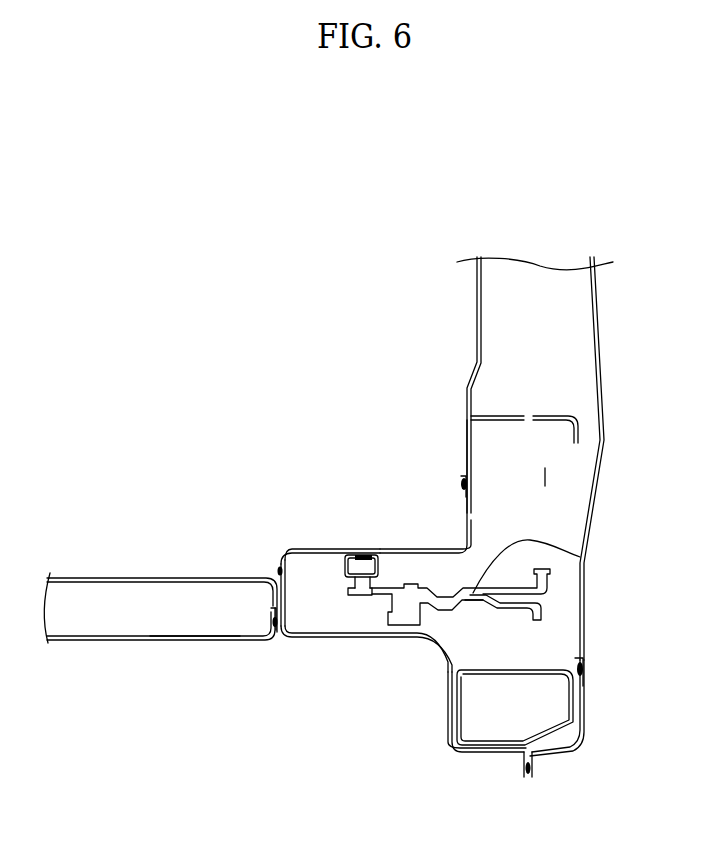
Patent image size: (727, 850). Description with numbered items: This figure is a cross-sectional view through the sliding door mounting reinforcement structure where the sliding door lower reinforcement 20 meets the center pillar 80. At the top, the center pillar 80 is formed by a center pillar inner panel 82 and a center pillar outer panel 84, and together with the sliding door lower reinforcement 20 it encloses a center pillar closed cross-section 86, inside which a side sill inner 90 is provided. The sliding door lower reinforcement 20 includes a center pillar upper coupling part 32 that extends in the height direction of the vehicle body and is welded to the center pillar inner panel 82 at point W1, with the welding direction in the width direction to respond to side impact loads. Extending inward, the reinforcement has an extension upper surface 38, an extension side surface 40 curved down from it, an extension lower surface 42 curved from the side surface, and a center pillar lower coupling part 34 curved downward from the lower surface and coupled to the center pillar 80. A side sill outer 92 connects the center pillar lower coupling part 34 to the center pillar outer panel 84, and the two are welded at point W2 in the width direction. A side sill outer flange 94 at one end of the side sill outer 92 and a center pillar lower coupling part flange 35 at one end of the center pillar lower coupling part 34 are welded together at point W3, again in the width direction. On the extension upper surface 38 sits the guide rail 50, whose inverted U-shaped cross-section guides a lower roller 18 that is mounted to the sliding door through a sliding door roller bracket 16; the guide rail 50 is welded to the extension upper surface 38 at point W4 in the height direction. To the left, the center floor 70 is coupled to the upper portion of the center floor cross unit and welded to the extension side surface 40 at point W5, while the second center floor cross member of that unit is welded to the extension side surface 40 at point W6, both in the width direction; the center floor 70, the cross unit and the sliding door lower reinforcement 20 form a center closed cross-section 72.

The center pillar 80 is at (545, 458).
The center pillar inner panel 82 is at (477, 341).
The center pillar outer panel 84 is at (594, 354).
The center pillar closed cross-section 86 is at (547, 473).
The welding point W1 is at (463, 482).
The welding point W2 is at (585, 673).
The welding point W3 is at (528, 777).
The welding point W4 is at (361, 555).
The welding point W5 is at (278, 570).
The welding point W6 is at (273, 627).
The center pillar upper coupling part 32 is at (462, 530).
The extension upper surface 38 is at (312, 551).
The extension side surface 40 is at (283, 587).
The extension lower surface 42 is at (388, 641).
The center floor 70 is at (118, 578).
The center closed cross-section 72 is at (209, 617).
The guide rail 50 is at (360, 539).
The lower roller 18 is at (345, 578).
The sliding door roller bracket 16 is at (580, 557).
The sliding door lower reinforcement 20 is at (511, 741).
The center pillar lower coupling part 34 is at (470, 753).
The side sill inner 90 is at (571, 716).
The side sill outer 92 is at (579, 742).
The center pillar lower coupling part flange 35 is at (521, 760).
The side sill outer flange 94 is at (535, 762).